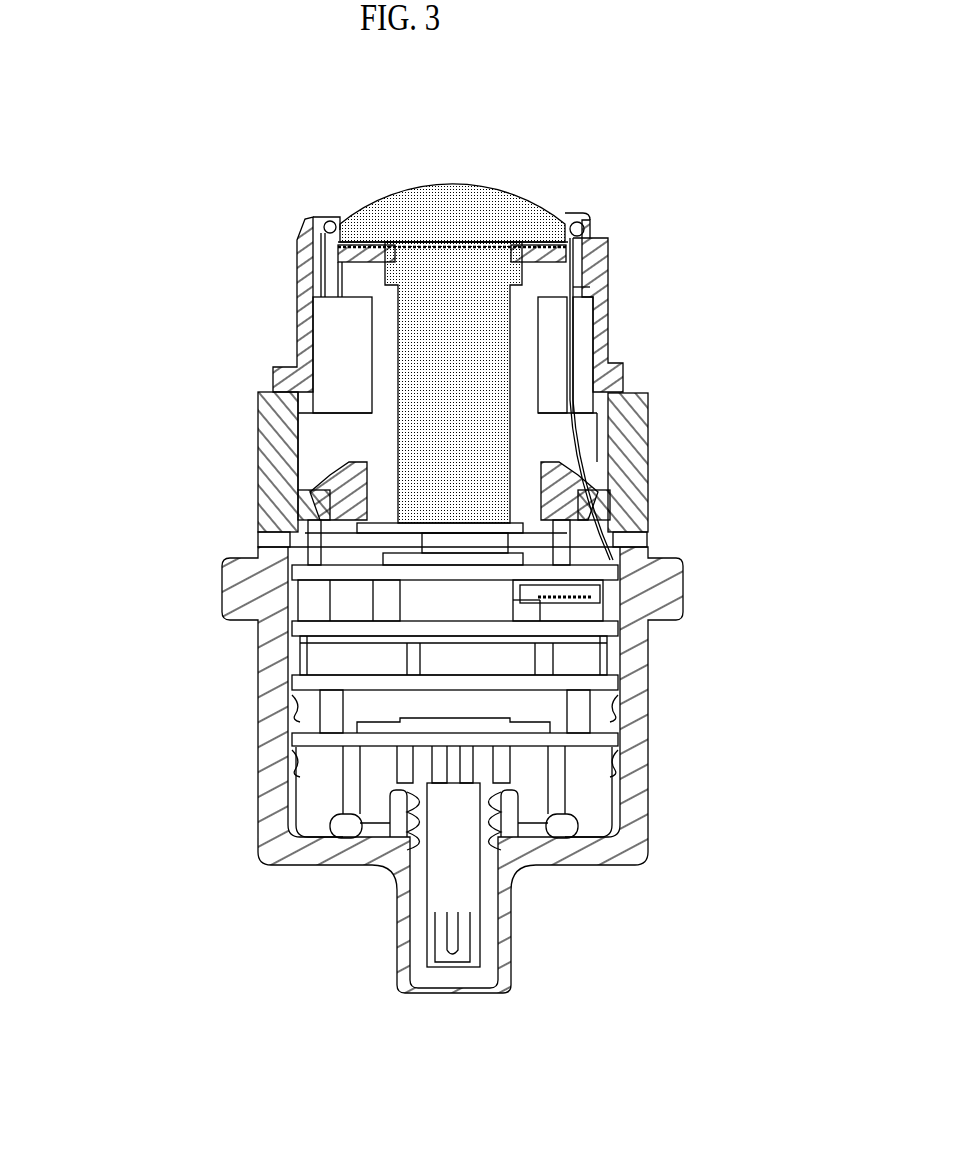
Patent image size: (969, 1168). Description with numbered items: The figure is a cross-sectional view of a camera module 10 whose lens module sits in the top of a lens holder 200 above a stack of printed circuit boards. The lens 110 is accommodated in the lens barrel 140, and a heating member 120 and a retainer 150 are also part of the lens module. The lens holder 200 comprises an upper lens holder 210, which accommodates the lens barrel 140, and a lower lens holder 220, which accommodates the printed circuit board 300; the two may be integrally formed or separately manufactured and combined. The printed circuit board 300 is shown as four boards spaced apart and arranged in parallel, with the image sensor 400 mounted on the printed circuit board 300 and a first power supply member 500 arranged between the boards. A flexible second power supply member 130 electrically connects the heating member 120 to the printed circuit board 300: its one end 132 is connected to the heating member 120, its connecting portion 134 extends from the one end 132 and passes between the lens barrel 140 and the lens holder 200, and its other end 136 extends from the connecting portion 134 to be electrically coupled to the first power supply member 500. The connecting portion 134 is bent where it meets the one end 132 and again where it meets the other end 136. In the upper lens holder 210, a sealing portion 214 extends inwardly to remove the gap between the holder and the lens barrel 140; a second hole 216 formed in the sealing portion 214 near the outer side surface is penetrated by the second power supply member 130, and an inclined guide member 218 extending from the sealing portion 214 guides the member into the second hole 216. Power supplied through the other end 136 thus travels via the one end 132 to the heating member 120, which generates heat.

The camera module 10 is at (242, 126).
The lens 110 is at (475, 197).
The heating member 120 is at (490, 242).
The second power supply member 130 is at (580, 318).
The one end 132 is at (543, 283).
The connecting portion 134 is at (574, 345).
The other end 136 is at (570, 600).
The lens barrel 140 is at (588, 245).
The retainer 150 is at (600, 258).
The lens holder 200 is at (212, 548).
The upper lens holder 210 is at (638, 418).
The sealing portion 214 is at (317, 497).
The second hole 216 is at (645, 535).
The guide member 218 is at (545, 463).
The lower lens holder 220 is at (636, 766).
The printed circuit board 300 is at (353, 572).
The image sensor 400 is at (427, 562).
The first power supply member 500 is at (540, 612).